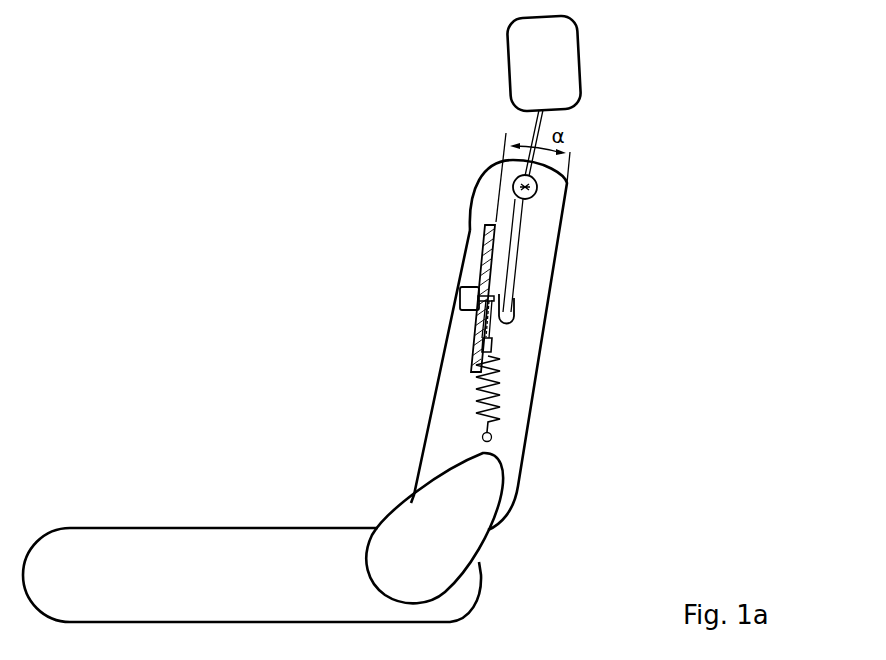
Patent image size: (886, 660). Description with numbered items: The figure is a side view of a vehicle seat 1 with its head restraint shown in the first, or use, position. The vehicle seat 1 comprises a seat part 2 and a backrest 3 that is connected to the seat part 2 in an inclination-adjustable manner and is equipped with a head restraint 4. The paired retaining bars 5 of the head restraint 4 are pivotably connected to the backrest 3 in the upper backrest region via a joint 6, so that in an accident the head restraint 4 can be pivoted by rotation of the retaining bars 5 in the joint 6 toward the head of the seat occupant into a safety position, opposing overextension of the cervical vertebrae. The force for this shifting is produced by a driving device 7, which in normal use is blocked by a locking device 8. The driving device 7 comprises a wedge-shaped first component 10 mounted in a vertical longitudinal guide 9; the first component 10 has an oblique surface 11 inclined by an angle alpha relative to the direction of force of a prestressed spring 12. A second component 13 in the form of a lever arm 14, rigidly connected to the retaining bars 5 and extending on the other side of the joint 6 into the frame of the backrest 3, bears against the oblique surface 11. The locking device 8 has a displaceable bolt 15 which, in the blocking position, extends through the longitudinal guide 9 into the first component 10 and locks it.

The vehicle seat 1 is at (190, 248).
The seat part 2 is at (180, 563).
The backrest 3 is at (450, 428).
The head restraint 4 is at (557, 50).
The retaining bars 5 is at (542, 120).
The joint 6 is at (537, 187).
The driving device 7 is at (398, 285).
The locking device 8 is at (460, 297).
The longitudinal guide 9 is at (485, 228).
The first component 10 is at (498, 292).
The oblique surface 11 is at (516, 314).
The spring 12 is at (497, 410).
The second component 13 is at (503, 318).
The lever arm 14 is at (525, 233).
The bolt 15 is at (478, 315).